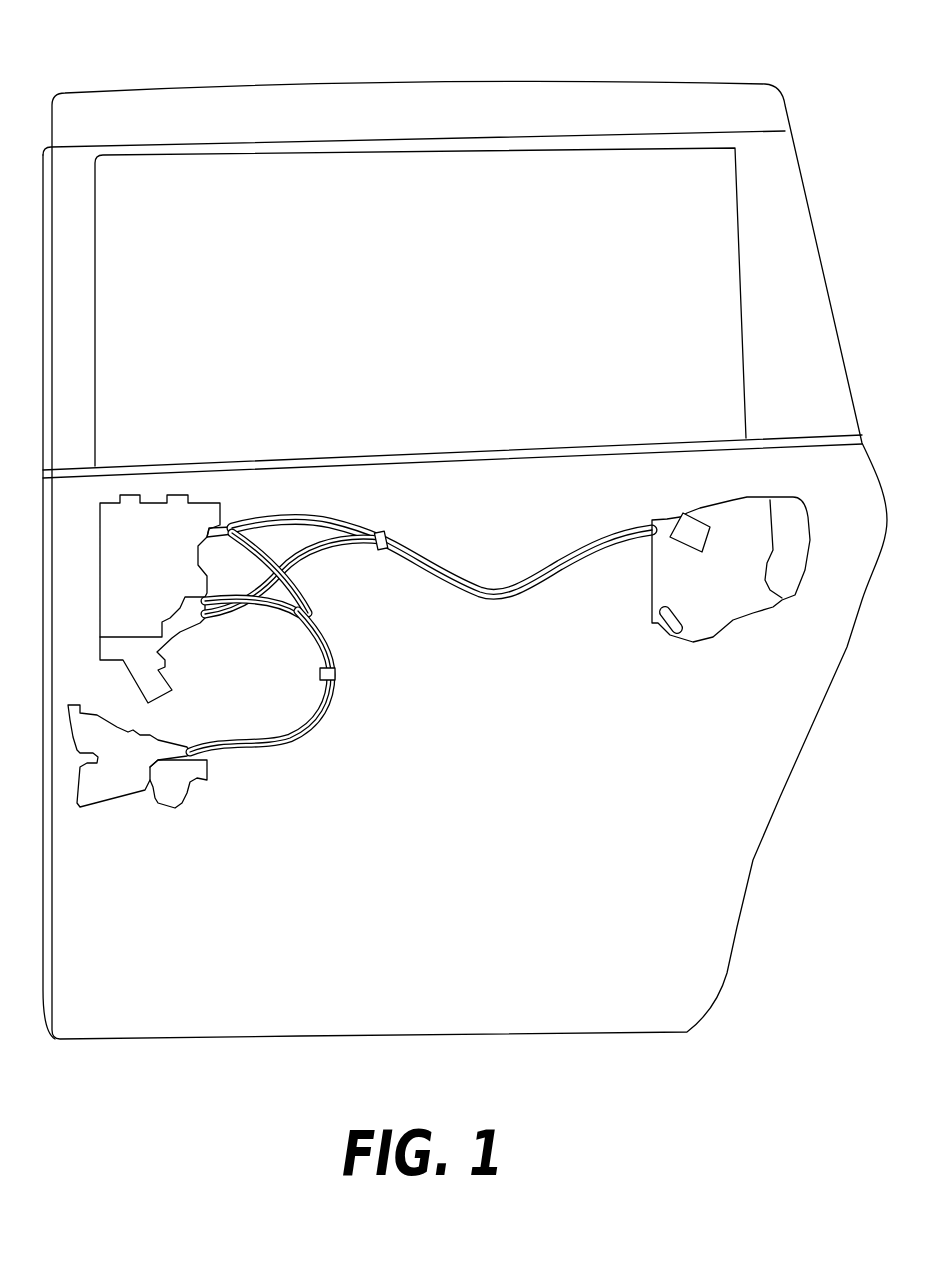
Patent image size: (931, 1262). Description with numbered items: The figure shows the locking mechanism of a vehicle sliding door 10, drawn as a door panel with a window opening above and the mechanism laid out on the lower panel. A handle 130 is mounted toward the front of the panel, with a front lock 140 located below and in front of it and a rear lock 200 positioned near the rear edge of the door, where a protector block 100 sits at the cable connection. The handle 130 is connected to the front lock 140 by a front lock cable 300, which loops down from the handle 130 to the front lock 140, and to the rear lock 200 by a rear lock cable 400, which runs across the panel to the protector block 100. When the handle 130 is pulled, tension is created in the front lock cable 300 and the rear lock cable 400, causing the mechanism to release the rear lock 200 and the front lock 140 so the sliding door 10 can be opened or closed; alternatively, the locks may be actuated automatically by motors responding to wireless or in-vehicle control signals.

The sliding door 10 is at (731, 82).
The protector block 100 is at (676, 522).
The handle 130 is at (195, 643).
The front lock 140 is at (201, 812).
The rear lock 200 is at (641, 606).
The front lock cable 300 is at (322, 721).
The rear lock cable 400 is at (500, 601).